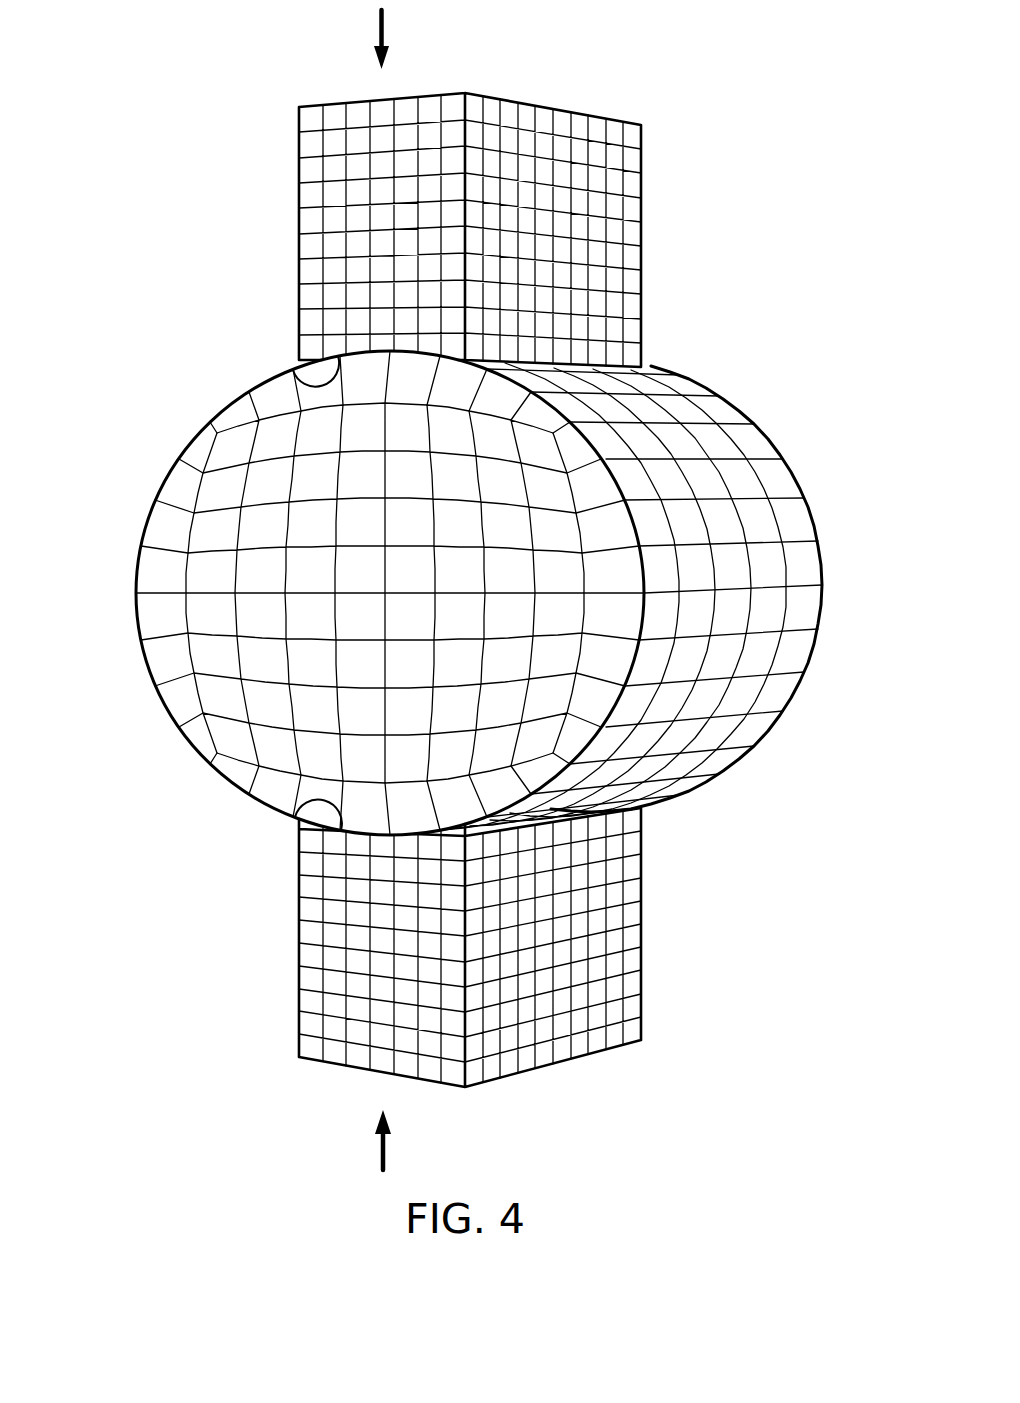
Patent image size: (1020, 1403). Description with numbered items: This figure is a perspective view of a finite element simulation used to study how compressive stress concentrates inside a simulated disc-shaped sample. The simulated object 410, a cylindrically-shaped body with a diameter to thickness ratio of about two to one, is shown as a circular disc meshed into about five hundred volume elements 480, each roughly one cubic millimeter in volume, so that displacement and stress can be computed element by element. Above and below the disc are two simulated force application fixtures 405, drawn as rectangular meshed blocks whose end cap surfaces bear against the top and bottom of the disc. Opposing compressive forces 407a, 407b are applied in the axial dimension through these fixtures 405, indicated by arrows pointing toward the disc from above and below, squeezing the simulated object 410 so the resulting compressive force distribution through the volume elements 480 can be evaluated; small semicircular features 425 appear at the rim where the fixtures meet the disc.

The simulated force application fixture 405 is at (212, 224).
The compressive force 407a is at (379, 27).
The compressive force 407b is at (380, 1150).
The simulated object 410 is at (102, 436).
The notch 425 is at (293, 377).
The volume element 480 is at (148, 569).